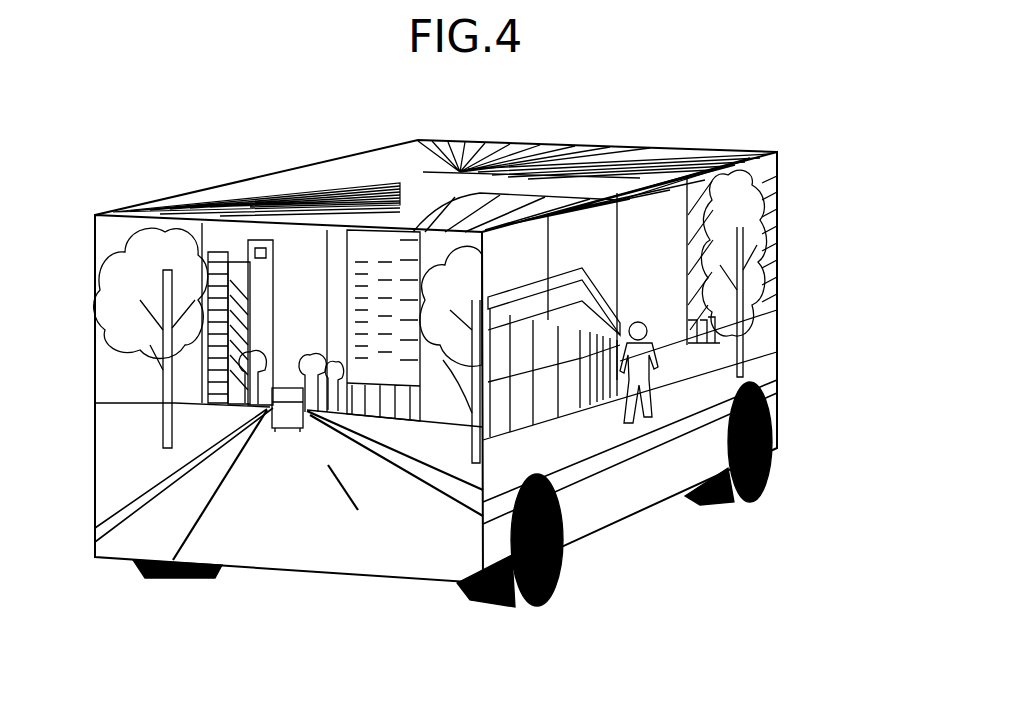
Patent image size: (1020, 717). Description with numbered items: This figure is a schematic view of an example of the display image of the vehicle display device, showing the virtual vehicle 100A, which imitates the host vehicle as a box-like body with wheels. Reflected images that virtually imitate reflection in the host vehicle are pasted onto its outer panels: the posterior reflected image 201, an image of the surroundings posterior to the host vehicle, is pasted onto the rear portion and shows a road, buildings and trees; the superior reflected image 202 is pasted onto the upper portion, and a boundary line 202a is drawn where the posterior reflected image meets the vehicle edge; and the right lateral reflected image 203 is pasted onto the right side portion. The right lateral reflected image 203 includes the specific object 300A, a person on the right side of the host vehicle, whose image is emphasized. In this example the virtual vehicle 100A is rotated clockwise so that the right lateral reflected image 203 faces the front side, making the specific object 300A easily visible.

The virtual vehicle 100A is at (310, 585).
The posterior reflected image 201 is at (283, 492).
The superior reflected image 202 is at (358, 172).
The boundary line of display 202a is at (270, 407).
The right lateral reflected image 203 is at (652, 478).
The specific object 300A is at (662, 385).